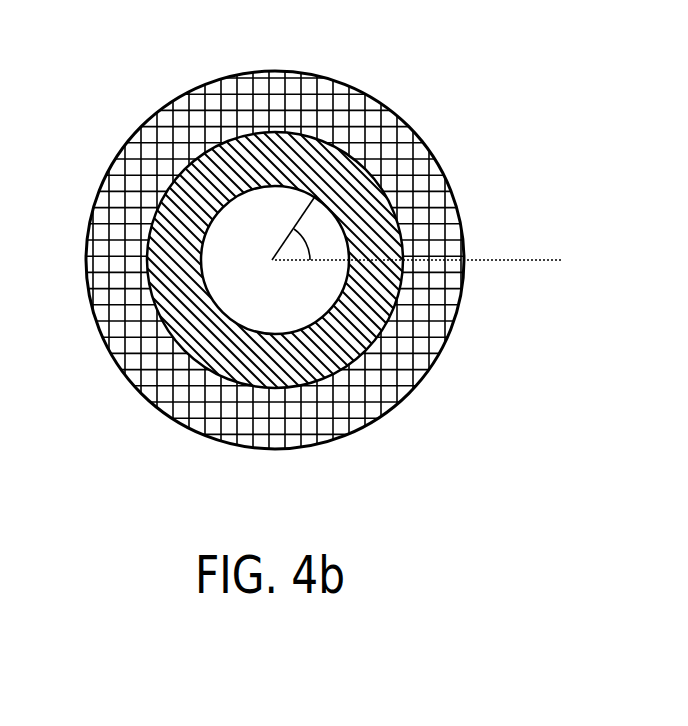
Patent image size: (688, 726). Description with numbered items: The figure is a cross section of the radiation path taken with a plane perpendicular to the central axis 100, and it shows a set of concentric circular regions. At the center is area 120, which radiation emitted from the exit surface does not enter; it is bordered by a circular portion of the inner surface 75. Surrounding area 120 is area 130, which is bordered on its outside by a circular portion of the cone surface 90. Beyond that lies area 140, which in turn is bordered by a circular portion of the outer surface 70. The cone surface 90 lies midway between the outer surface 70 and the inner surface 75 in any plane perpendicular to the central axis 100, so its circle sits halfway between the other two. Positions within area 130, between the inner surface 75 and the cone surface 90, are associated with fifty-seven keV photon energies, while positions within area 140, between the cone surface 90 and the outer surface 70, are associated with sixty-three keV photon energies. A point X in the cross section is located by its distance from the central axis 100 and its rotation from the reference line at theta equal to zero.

The outer surface 70 is at (436, 353).
The area 140 is at (405, 168).
The cone surface 90 is at (404, 245).
The area 130 is at (314, 138).
The inner surface 75 is at (222, 318).
The area 120 is at (233, 237).
The central axis 100 is at (272, 260).